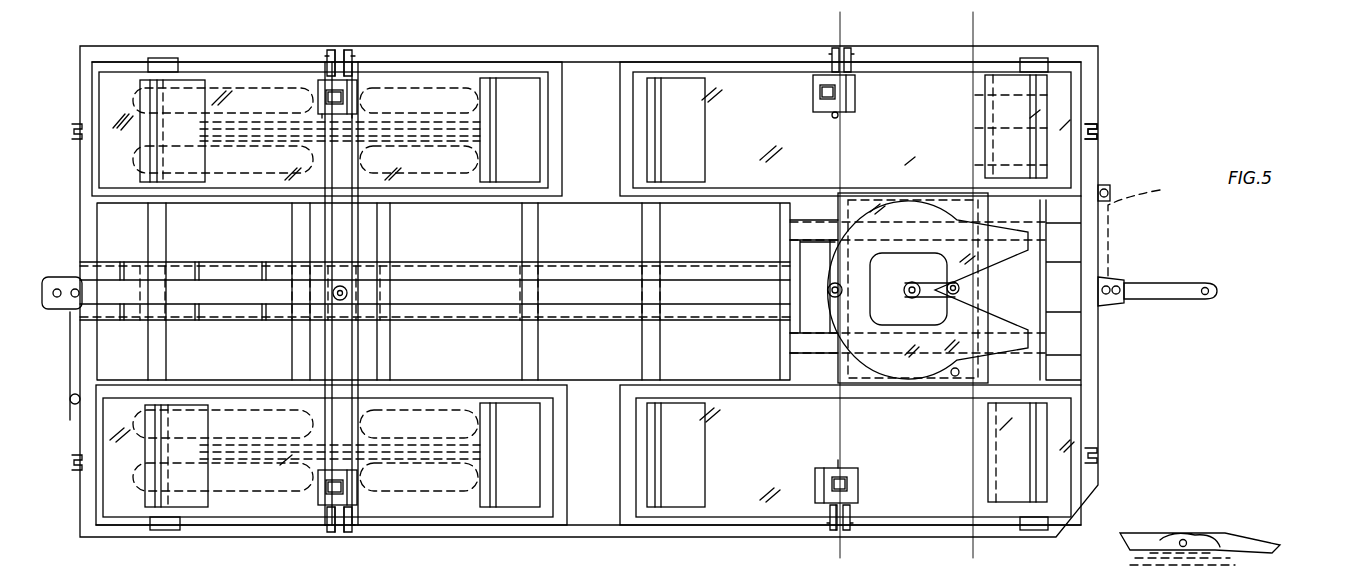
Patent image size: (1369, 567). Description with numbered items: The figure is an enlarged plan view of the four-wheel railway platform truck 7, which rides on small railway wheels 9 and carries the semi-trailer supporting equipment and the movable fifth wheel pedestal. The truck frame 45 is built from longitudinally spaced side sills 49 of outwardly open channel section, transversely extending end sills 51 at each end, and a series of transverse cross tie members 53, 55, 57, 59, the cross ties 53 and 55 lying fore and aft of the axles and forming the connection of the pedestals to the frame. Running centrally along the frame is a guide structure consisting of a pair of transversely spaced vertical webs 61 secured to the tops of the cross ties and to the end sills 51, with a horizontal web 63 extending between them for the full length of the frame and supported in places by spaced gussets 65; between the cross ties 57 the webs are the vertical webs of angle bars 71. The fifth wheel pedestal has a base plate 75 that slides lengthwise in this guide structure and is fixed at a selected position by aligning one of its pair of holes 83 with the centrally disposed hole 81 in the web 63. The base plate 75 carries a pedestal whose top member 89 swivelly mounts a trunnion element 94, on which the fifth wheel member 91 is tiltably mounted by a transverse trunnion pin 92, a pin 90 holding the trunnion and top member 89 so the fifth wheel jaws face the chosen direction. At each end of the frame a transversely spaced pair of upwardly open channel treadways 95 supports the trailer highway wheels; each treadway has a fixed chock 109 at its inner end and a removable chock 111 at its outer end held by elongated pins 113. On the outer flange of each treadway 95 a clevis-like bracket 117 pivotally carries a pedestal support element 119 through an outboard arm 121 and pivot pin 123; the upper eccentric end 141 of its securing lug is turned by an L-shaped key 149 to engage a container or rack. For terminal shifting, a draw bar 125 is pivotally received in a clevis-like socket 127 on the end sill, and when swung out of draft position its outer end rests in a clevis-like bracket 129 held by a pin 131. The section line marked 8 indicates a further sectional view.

The railway platform truck 7 is at (1118, 382).
The section line 8 is at (961, 24).
The railway wheels 9 is at (358, 243).
The truck frame 45 is at (537, 538).
The side sills 49 is at (608, 45).
The end sills 51 is at (80, 208).
The cross tie member 53 is at (166, 350).
The cross tie member 55 is at (292, 352).
The cross tie member 57 is at (395, 351).
The cross tie member 59 is at (520, 238).
The webs 61 is at (130, 260).
The horizontal web 63 is at (296, 302).
The gussets 65 is at (267, 281).
The angle bars 71 is at (704, 262).
The base plate 75 is at (1047, 355).
The hole 81 is at (348, 293).
The holes 83 is at (830, 289).
The top member 89 is at (1274, 562).
The pin 90 is at (927, 283).
The fifth wheel member 91 is at (918, 198).
The trunnion pin 92 is at (1185, 538).
The trunnion element 94 is at (1160, 552).
The treadways 95 is at (417, 80).
The fixed chock 109 is at (408, 152).
The removable chock 111 is at (202, 158).
The elongated pins 113 is at (164, 60).
The clevis-like bracket 117 is at (326, 62).
The pedestal support element 119 is at (360, 92).
The outboard arm 121 is at (335, 53).
The pivot pin 123 is at (350, 50).
The draw bar 125 is at (1165, 280).
The clevis-like socket 127 is at (1107, 279).
The clevis-like bracket 129 is at (1108, 187).
The pin 131 is at (1103, 184).
The eccentric end 141 is at (326, 97).
The key 149 is at (850, 470).